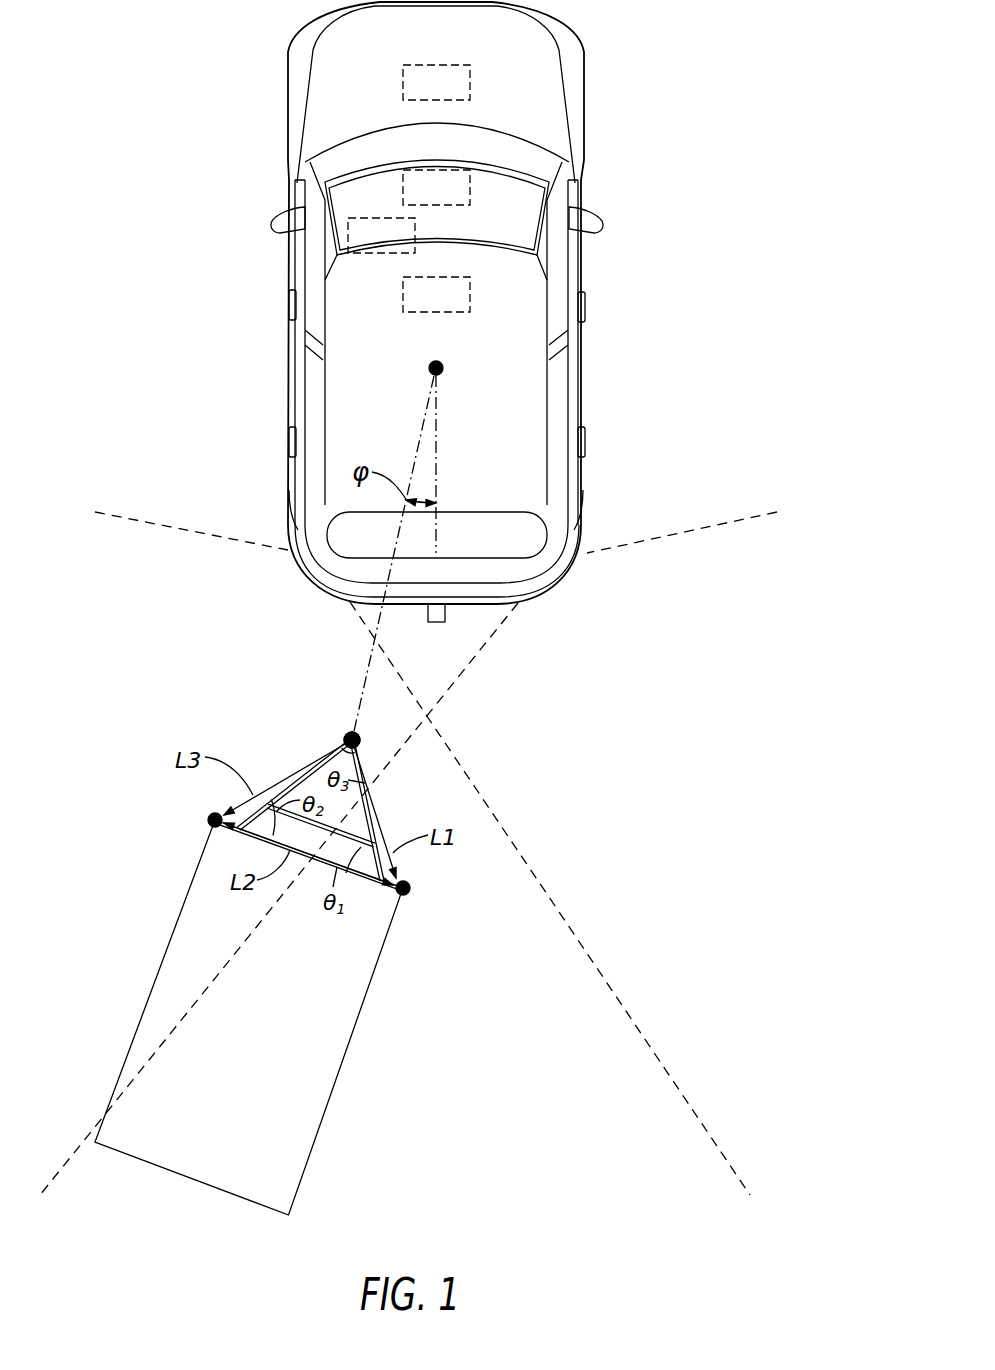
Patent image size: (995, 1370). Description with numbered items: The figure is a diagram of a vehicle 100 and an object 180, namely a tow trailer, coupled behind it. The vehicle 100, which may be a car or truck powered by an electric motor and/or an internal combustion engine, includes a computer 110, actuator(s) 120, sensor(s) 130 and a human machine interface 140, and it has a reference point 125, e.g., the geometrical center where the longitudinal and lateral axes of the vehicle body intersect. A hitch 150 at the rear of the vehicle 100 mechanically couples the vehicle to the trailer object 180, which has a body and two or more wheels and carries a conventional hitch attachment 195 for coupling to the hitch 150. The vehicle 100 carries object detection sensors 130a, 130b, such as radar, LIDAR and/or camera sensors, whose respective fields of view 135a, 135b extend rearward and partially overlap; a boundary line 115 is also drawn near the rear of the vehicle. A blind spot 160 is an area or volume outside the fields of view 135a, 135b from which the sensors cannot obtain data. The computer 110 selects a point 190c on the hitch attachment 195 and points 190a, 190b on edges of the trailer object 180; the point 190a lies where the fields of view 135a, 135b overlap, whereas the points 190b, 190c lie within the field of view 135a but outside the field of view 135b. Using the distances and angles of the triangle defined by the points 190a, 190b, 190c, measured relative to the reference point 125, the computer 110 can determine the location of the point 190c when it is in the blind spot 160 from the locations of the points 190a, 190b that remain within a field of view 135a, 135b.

The vehicle 100 is at (507, 465).
The computer 110 is at (436, 294).
The actuator(s) 120 is at (436, 82).
The reference point 125 is at (442, 366).
The sensor(s) 130 is at (381, 235).
The object detection sensor 130a is at (292, 495).
The object detection sensor 130b is at (587, 492).
The human machine interface (HMI) 140 is at (436, 187).
The sensor boundary line 115 is at (413, 530).
The field of view 135a is at (268, 590).
The field of view 135b is at (610, 590).
The hitch 150 is at (445, 612).
The blind spot 160 is at (452, 660).
The object 180 is at (367, 1005).
The point 190a is at (409, 895).
The point 190b is at (208, 819).
The point 190c is at (350, 734).
The hitch attachment 195 is at (352, 740).